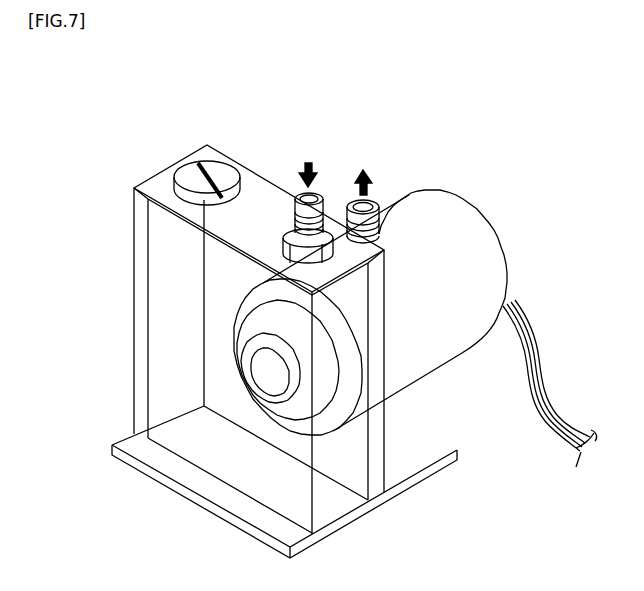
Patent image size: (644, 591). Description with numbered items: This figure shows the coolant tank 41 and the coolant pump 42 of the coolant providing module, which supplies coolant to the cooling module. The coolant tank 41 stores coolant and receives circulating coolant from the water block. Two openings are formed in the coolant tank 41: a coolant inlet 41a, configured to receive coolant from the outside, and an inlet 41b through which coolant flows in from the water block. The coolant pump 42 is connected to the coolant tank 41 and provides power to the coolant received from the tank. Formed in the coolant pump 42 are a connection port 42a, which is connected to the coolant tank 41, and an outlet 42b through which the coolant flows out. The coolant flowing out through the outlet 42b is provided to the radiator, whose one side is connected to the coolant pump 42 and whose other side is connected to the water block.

The coolant tank 41 is at (141, 303).
The coolant inlet 41a is at (186, 172).
The inlet 41b is at (296, 193).
The coolant pump 42 is at (467, 243).
The connection port 42a is at (258, 377).
The outlet 42b is at (373, 201).